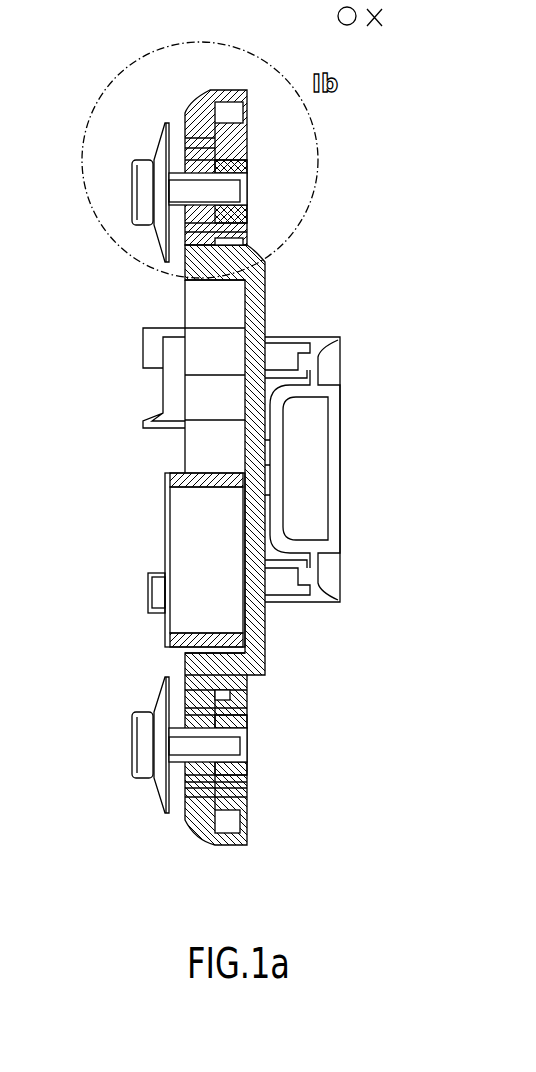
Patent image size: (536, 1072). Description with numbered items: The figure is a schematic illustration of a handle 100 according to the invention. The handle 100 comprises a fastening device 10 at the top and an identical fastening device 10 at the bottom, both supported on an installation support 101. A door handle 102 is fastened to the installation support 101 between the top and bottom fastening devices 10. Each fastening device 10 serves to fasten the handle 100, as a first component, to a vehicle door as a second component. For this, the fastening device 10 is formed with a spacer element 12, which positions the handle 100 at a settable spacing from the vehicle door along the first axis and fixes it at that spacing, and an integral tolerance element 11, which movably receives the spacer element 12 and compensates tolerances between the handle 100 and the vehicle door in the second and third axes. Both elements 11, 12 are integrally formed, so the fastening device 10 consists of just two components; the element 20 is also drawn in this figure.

The fastening device 10 is at (130, 101).
The tolerance element 11 is at (230, 137).
The spacer element 12 is at (247, 215).
The screw 20 is at (142, 190).
The handle 100 is at (98, 396).
The installation support 101 is at (257, 311).
The door handle 102 is at (337, 528).